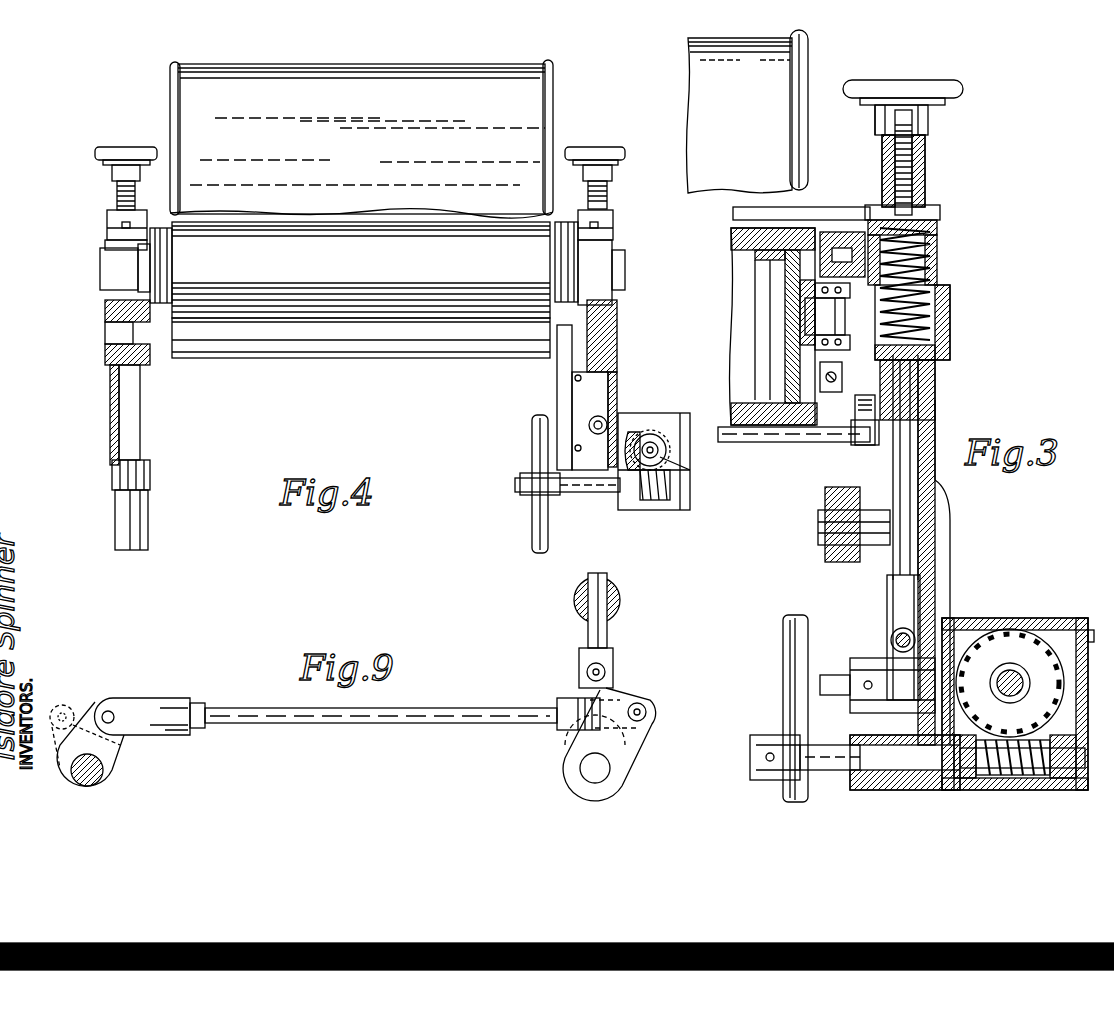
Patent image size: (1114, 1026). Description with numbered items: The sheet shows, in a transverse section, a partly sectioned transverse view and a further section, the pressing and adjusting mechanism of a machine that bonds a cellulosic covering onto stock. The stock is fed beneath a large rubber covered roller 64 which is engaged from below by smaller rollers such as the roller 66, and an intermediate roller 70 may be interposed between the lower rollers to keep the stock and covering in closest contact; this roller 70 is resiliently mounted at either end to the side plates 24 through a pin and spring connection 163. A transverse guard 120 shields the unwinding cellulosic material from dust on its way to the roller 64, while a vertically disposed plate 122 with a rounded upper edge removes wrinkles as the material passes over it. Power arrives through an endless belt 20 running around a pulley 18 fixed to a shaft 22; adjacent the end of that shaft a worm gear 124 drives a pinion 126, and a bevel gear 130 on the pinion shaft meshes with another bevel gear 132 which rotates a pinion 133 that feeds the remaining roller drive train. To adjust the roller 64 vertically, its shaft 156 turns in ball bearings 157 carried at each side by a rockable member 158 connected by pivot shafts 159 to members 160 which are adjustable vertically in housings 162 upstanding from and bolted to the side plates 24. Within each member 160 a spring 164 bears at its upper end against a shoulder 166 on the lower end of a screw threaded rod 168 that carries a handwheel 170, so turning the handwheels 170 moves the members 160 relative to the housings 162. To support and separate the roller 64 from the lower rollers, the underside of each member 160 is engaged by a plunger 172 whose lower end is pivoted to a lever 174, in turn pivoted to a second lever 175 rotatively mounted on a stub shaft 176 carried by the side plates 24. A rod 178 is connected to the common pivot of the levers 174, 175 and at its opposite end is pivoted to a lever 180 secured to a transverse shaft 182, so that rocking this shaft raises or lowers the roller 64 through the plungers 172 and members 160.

In FIG. 4, the pulley 18 is at (540, 440).
In FIG. 3, the pulley 18 is at (800, 625).
In FIG. 3, the endless belt 20 is at (788, 680).
In FIG. 3, the shaft 22 is at (897, 762).
In FIG. 4, the side plates 24 is at (110, 405).
In FIG. 4, the rubber covered roller 64 is at (361, 270).
In FIG. 3, the rubber covered roller 64 is at (800, 236).
In FIG. 4, the roller 66 is at (397, 342).
In FIG. 3, the intermediate roller 70 is at (770, 430).
In FIG. 4, the guard 120 is at (525, 90).
In FIG. 3, the guard 120 is at (722, 126).
In FIG. 3, the vertically disposed plate 122 is at (735, 214).
In FIG. 4, the worm gear 124 is at (660, 508).
In FIG. 3, the worm gear 124 is at (985, 780).
In FIG. 4, the pinion 126 is at (655, 428).
In FIG. 3, the pinion 126 is at (1022, 664).
In FIG. 4, the bevel gear 130 is at (695, 470).
In FIG. 4, the bevel gear 132 is at (630, 436).
In FIG. 4, the pinion 133 is at (578, 472).
In FIG. 3, the shaft 156 is at (812, 325).
In FIG. 3, the ball bearings 157 is at (812, 303).
In FIG. 4, the rockable member 158 is at (125, 262).
In FIG. 3, the rockable member 158 is at (802, 290).
In FIG. 3, the pivot shafts 159 is at (845, 232).
In FIG. 3, the vertically adjustable members 160 is at (950, 308).
In FIG. 4, the housings 162 is at (110, 232).
In FIG. 3, the housings 162 is at (938, 243).
In FIG. 3, the pin and spring connection 163 is at (858, 430).
In FIG. 3, the spring 164 is at (940, 268).
In FIG. 3, the shoulder 166 is at (935, 218).
In FIG. 3, the screw threaded rod 168 is at (925, 190).
In FIG. 4, the handwheel 170 is at (122, 145).
In FIG. 3, the handwheel 170 is at (950, 92).
In FIG. 3, the plunger 172 is at (905, 492).
In FIG. 9, the plunger 172 is at (610, 582).
In FIG. 9, the lever 174 is at (618, 682).
In FIG. 9, the second lever 175 is at (630, 742).
In FIG. 9, the stub shaft 176 is at (590, 766).
In FIG. 3, the rod 178 is at (920, 628).
In FIG. 9, the rod 178 is at (470, 710).
In FIG. 9, the lever 180 is at (122, 740).
In FIG. 3, the shaft 182 is at (835, 672).
In FIG. 9, the shaft 182 is at (105, 770).